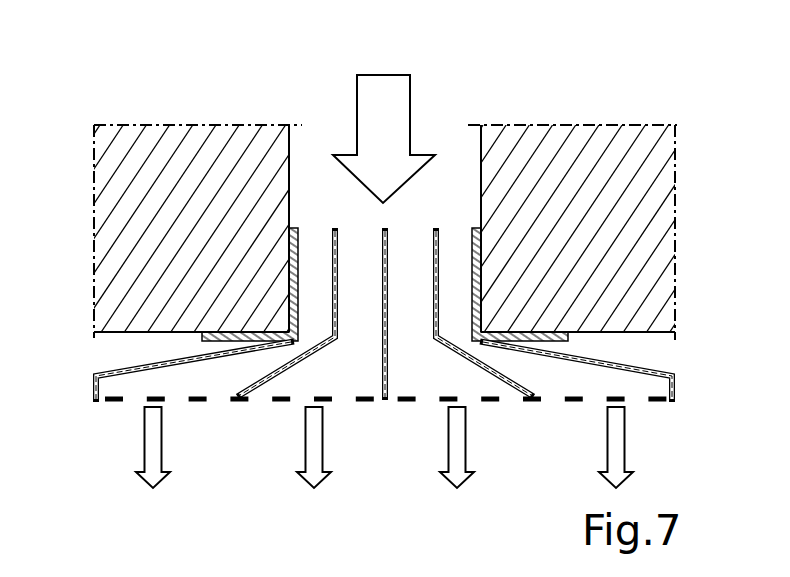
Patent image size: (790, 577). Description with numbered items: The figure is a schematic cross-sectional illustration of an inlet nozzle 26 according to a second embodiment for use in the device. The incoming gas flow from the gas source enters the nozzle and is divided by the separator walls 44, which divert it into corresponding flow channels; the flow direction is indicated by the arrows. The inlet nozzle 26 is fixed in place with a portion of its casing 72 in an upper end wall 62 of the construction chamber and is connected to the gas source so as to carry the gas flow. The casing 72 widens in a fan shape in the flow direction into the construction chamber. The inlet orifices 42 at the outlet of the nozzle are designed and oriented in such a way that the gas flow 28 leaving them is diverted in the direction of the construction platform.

The inlet nozzle 26 is at (566, 93).
The casing 72 is at (116, 368).
The upper end wall 62 is at (630, 334).
The separator walls 44 is at (384, 344).
The inlet orifices 42 is at (262, 399).
The gas flow 28 is at (148, 438).